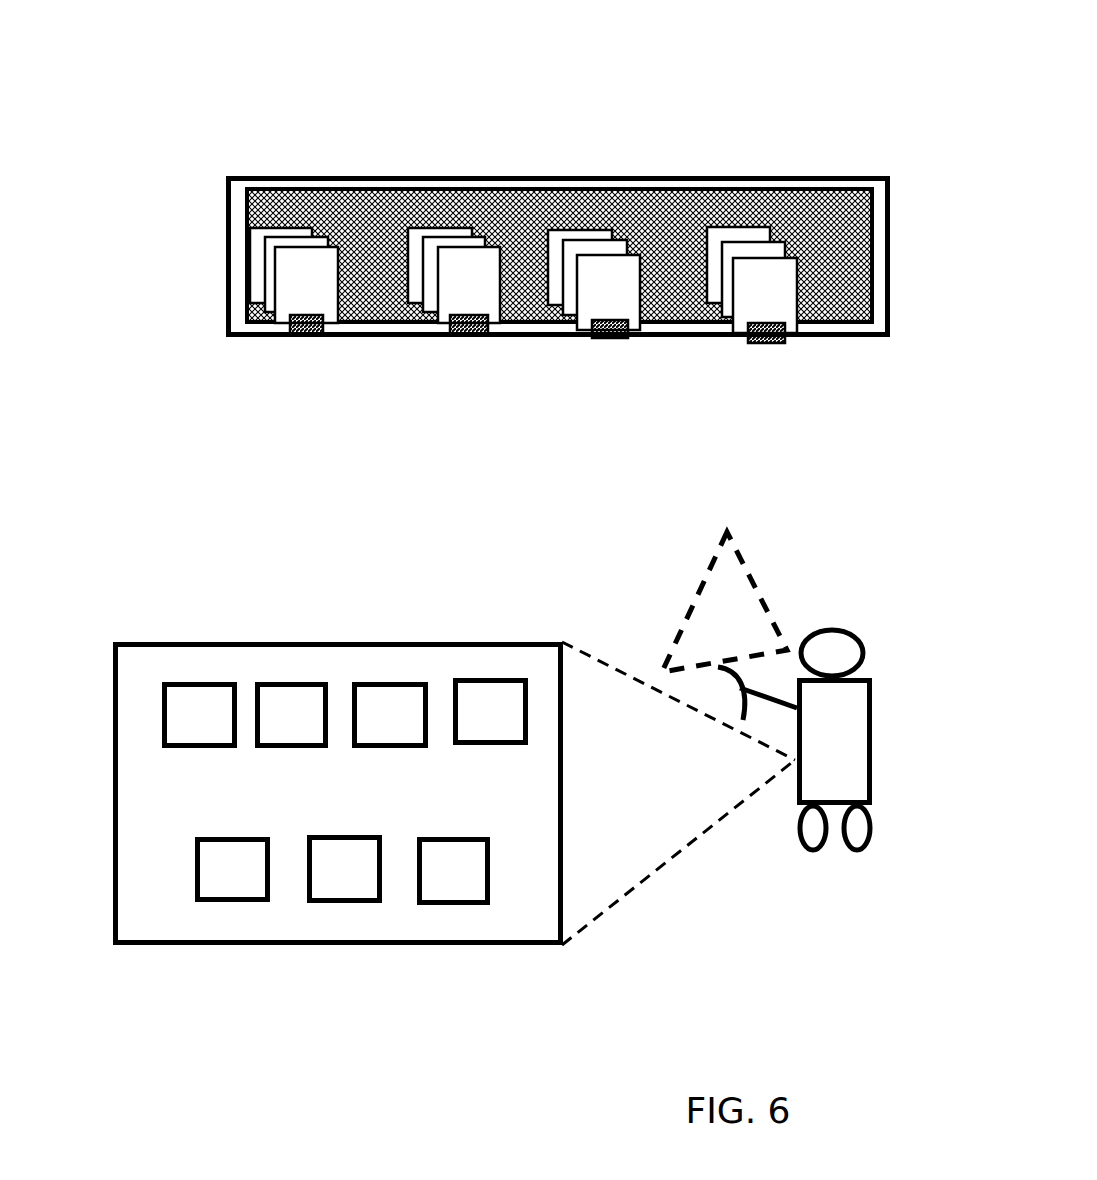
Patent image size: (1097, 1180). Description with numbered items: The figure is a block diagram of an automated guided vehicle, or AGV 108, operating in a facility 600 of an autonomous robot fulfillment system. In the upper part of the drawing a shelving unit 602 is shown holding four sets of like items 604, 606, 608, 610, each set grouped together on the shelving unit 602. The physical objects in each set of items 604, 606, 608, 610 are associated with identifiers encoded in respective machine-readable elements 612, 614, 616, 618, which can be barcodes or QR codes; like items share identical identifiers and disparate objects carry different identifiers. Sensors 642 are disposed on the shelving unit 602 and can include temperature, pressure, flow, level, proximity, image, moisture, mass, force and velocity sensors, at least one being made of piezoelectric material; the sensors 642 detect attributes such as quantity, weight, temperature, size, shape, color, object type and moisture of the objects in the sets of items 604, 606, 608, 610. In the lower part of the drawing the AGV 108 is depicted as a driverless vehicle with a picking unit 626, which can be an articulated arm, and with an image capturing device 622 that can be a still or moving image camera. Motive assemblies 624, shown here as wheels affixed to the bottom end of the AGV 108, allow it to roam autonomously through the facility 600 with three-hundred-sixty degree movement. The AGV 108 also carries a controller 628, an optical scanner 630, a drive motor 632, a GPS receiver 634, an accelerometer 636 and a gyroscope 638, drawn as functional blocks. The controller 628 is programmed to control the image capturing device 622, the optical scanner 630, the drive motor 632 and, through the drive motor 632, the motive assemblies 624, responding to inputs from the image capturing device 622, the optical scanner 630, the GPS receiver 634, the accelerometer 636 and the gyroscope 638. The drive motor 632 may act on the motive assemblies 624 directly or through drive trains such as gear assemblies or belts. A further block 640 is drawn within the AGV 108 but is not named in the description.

The facility 600 is at (150, 60).
The shelving unit 602 is at (677, 177).
The sensors 642 is at (510, 190).
The set of items 604 is at (243, 333).
The set of items 606 is at (398, 322).
The set of items 608 is at (553, 322).
The set of items 610 is at (707, 322).
The machine-readable element 612 is at (300, 340).
The machine-readable element 614 is at (462, 338).
The machine-readable element 616 is at (607, 340).
The machine-readable element 618 is at (760, 343).
The image capturing device 622 is at (855, 633).
The motive assemblies 624 is at (857, 852).
The picking unit 626 is at (740, 700).
The controller 628 is at (490, 678).
The optical scanner 630 is at (395, 682).
The drive motor 632 is at (293, 682).
The GPS receiver 634 is at (198, 682).
The accelerometer 636 is at (218, 903).
The gyroscope 638 is at (330, 903).
The display element 640 is at (442, 898).
The AGV 108 is at (852, 740).